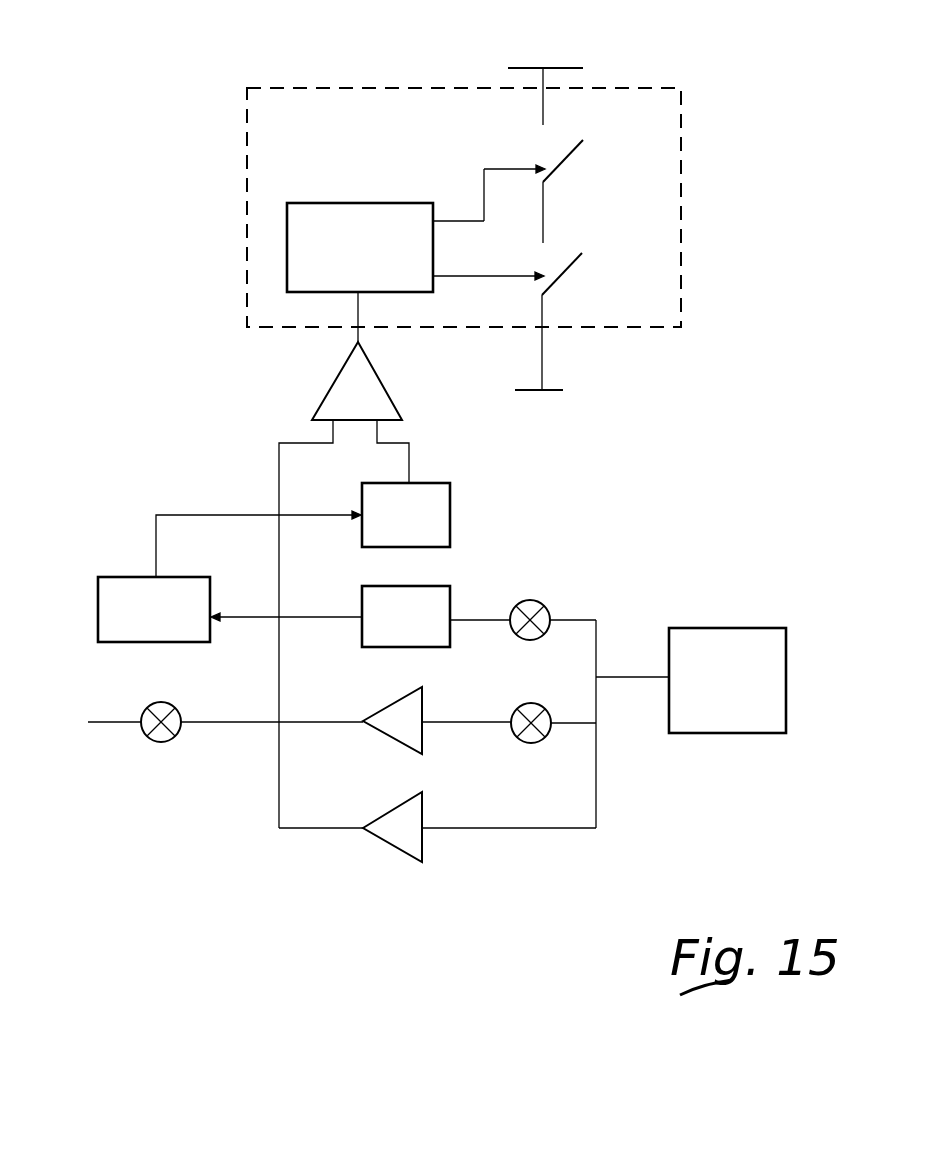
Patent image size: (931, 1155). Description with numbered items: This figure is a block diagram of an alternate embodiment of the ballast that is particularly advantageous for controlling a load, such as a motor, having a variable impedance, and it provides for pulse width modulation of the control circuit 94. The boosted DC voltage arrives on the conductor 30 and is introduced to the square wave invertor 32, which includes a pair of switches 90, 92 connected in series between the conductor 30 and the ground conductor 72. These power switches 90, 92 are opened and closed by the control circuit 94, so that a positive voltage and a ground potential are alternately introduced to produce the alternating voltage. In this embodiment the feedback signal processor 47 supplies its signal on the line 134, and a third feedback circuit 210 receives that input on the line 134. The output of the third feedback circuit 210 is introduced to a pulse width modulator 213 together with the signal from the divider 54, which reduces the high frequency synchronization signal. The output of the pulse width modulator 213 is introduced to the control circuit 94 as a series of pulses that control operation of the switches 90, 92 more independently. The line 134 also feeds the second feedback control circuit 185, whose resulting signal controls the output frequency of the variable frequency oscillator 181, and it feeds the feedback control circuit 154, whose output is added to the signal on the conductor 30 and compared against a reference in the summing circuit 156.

The conductor 30 is at (535, 67).
The square wave invertor 32 is at (682, 142).
The switch 90 is at (567, 171).
The switch 92 is at (567, 282).
The control circuit 94 is at (283, 246).
The conductor 72 is at (571, 381).
The pulse width modulator 213 is at (385, 380).
The divider 54 is at (452, 519).
The variable frequency oscillator 181 is at (124, 577).
The second feedback control circuit 185 is at (448, 586).
The conductor 134 is at (630, 676).
The feedback signal processor 47 is at (733, 628).
The feedback control circuit 154 is at (425, 700).
The summing circuit 156 is at (172, 742).
The third feedback circuit 210 is at (425, 807).